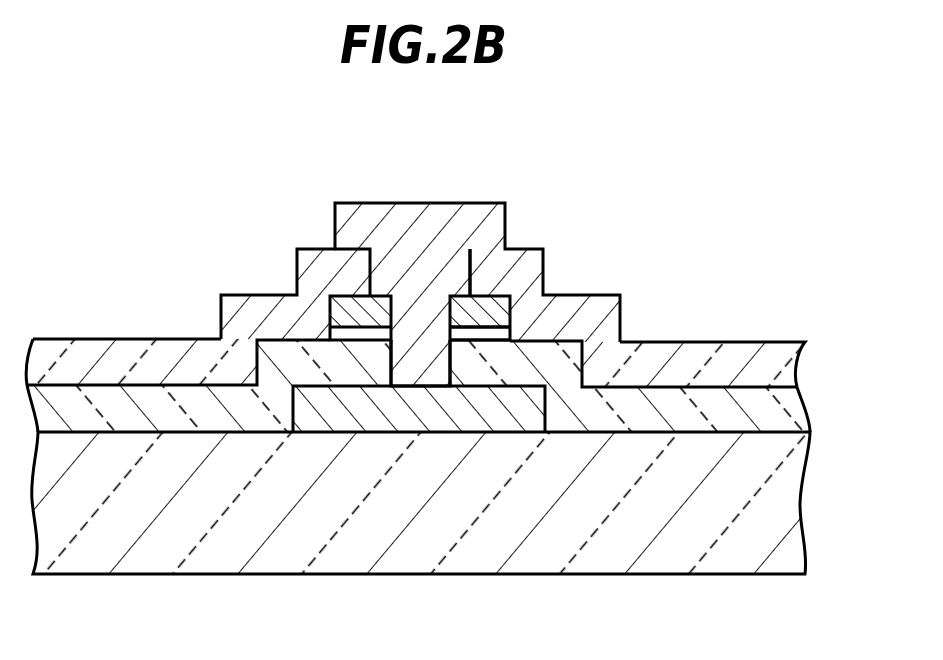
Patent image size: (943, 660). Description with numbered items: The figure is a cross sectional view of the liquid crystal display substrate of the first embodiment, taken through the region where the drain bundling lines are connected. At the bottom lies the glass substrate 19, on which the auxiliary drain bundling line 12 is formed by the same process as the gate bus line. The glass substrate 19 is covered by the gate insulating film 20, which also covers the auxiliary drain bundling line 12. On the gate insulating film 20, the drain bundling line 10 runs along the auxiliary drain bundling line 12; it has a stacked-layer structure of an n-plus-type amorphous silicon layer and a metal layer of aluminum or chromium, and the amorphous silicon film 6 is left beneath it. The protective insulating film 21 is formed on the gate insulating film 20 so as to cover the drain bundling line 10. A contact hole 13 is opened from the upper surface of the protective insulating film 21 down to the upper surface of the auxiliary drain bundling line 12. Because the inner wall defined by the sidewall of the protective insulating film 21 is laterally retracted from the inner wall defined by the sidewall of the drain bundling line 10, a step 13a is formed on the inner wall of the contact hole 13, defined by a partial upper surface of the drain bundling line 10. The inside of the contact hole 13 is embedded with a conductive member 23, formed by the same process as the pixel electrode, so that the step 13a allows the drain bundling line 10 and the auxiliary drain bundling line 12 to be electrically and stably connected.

The amorphous silicon film 6 is at (512, 338).
The drain bundling line 10 is at (502, 300).
The auxiliary drain bundling line 12 is at (416, 424).
The contact hole 13 is at (392, 308).
The step 13a is at (456, 290).
The glass substrate 19 is at (795, 497).
The gate insulating film 20 is at (795, 407).
The protective insulating film 21 is at (802, 367).
The conductive member 23 is at (335, 220).